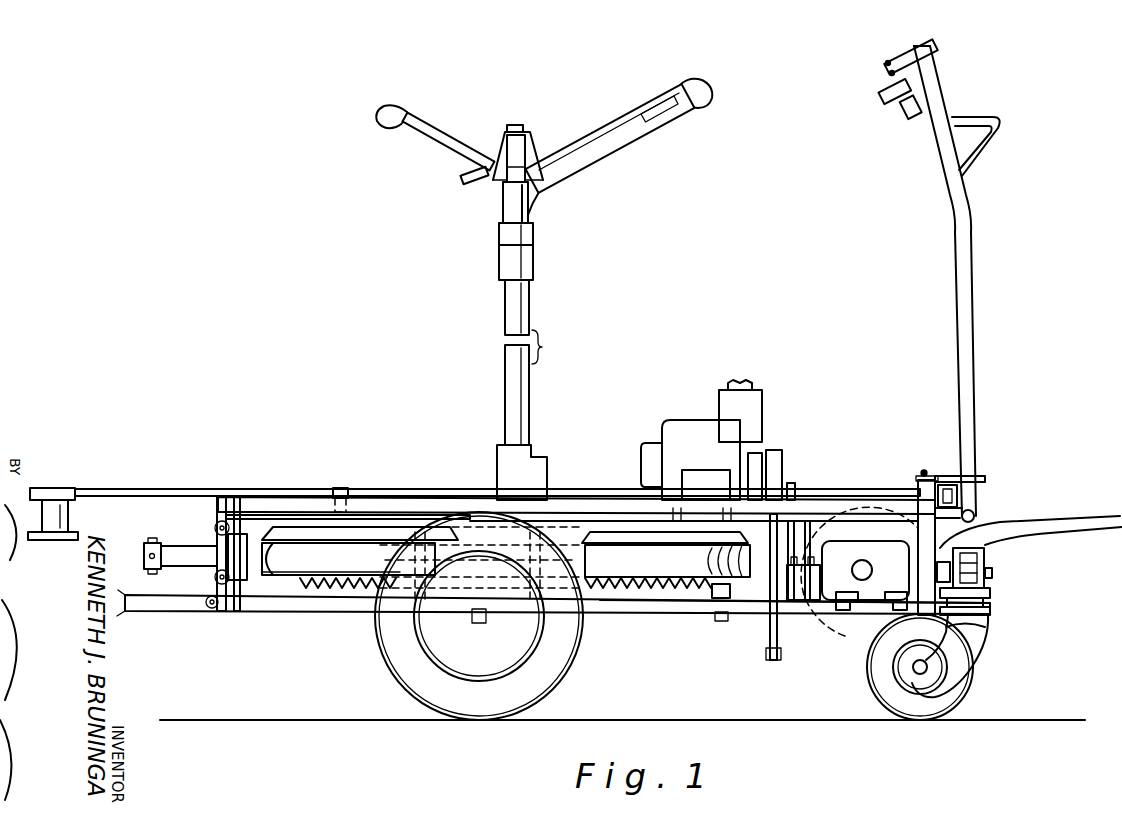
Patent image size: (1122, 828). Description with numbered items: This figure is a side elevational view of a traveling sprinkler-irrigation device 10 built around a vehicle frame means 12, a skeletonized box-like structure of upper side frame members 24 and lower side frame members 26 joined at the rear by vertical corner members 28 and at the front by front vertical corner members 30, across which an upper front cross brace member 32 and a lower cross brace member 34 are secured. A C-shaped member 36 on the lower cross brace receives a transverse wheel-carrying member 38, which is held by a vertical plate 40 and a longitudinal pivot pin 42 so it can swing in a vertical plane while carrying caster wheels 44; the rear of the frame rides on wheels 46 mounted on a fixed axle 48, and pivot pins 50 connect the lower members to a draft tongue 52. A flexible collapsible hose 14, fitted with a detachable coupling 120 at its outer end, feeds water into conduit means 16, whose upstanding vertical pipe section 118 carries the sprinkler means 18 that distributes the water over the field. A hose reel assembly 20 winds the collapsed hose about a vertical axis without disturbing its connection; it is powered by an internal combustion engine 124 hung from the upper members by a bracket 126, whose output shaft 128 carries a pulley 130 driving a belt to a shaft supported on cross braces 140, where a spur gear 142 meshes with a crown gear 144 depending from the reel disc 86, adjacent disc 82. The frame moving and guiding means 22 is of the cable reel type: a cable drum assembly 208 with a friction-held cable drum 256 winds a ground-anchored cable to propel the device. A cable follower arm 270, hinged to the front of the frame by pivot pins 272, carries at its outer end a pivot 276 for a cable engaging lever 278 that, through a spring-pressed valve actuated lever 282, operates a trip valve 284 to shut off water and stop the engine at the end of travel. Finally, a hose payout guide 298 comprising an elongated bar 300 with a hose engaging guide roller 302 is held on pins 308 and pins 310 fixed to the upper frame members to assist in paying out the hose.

The traveling sprinkler-irrigation device 10 is at (576, 387).
The vehicle frame means 12 is at (583, 492).
The hose 14 is at (298, 562).
The conduit means 16 is at (536, 378).
The sprinkler means 18 is at (588, 124).
The hose reel assembly 20 is at (350, 472).
The frame moving and guiding means 22 is at (800, 536).
The upper side frame members 24 is at (437, 500).
The lower side frame members 26 is at (600, 610).
The rear vertical corner members 28 is at (210, 546).
The front vertical corner members 30 is at (918, 488).
The upper front cross brace member 32 is at (928, 478).
The lower cross brace member 34 is at (962, 535).
The C-shaped member 36 is at (1000, 530).
The wheel-carrying member 38 is at (986, 556).
The vertical plate 40 is at (992, 591).
The pivot pin 42 is at (993, 578).
The caster wheels 44 is at (985, 632).
The wheels 46 is at (451, 616).
The fixed axle 48 is at (478, 628).
The pivot pins 50 is at (212, 614).
The draft tongue 52 is at (158, 606).
The disc 82 is at (630, 530).
The disc 86 is at (656, 590).
The upstanding vertical pipe section 118 is at (505, 316).
The detachable coupling 120 is at (150, 540).
The internal combustion engine 124 is at (700, 420).
The bracket 126 is at (700, 545).
The output shaft 128 is at (770, 450).
The pulley 130 is at (782, 458).
The cross braces 140 is at (770, 626).
The spur gear 142 is at (724, 620).
The crown gear 144 is at (318, 592).
The cable drum assembly 208 is at (856, 640).
The cable drum 256 is at (870, 655).
The cable follower arm 270 is at (978, 312).
The pivot pins 272 is at (980, 510).
The pivot 276 is at (884, 62).
The cable engaging lever 278 is at (914, 46).
The valve actuated lever 282 is at (886, 84).
The trip valve 284 is at (902, 112).
The hose payout guide 298 is at (180, 458).
The elongated bar 300 is at (285, 496).
The hose engaging guide roller 302 is at (78, 505).
The pins 308 is at (327, 494).
The pins 310 is at (232, 485).